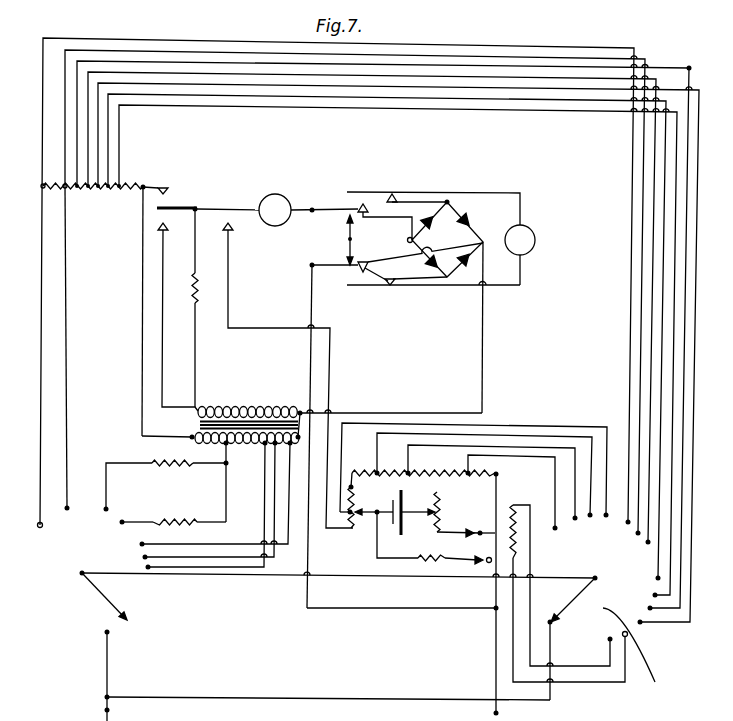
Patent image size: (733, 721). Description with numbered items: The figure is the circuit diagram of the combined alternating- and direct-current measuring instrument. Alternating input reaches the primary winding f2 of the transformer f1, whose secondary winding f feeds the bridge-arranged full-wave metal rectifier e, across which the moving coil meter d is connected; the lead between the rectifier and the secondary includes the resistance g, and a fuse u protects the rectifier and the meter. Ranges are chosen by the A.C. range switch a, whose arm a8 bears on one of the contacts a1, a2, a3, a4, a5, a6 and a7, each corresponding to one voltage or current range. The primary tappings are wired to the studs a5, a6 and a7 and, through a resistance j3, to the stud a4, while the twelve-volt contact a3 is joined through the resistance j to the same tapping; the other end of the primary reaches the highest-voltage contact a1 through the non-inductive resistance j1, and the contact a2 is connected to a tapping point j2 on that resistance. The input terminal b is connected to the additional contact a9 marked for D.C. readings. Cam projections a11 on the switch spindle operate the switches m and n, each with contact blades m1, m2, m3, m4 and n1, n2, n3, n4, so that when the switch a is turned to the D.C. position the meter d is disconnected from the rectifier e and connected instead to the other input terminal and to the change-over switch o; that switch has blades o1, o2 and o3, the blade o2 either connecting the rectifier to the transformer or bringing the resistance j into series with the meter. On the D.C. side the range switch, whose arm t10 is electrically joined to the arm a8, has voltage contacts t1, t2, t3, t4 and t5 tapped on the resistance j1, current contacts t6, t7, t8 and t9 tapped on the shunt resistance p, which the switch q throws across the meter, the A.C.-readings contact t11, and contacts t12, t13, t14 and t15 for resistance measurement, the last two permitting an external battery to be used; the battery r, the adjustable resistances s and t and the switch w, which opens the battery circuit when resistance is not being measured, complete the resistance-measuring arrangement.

The non-inductive resistance j1 is at (110, 192).
The tapping point j2 is at (70, 192).
The contact blade o1 is at (196, 208).
The contact blade o2 is at (167, 225).
The contact blade o3 is at (163, 187).
The fuse u is at (273, 193).
The resistance g is at (199, 287).
The switch q is at (233, 226).
The switch m is at (396, 201).
The contact blade m1 is at (363, 190).
The contact blade m2 is at (428, 212).
The contact blade m3 is at (323, 208).
The contact blade m4 is at (418, 205).
The full wave metal rectifier e is at (460, 207).
The moving coil meter d is at (535, 240).
The switch n is at (373, 273).
The contact blade n1 is at (355, 287).
The contact blade n2 is at (433, 279).
The contact blade n3 is at (311, 267).
The contact blade n4 is at (393, 283).
The cam projections a11 is at (348, 240).
The secondary winding f is at (272, 409).
The transformer f1 is at (237, 424).
The primary winding f2 is at (248, 445).
The resistance j is at (172, 467).
The resistance j3 is at (173, 520).
The A.C. range switch a is at (72, 547).
The contact a1 is at (335, 294).
The contact a2 is at (67, 506).
The contact a3 is at (106, 509).
The contact a4 is at (122, 522).
The contact a5 is at (142, 544).
The contact a6 is at (145, 557).
The contact a7 is at (150, 568).
The switch arm a8 is at (102, 599).
The additional contact a9 is at (107, 632).
The input terminal b is at (313, 708).
The shunt resistance p is at (447, 470).
The adjustable resistance s is at (348, 514).
The battery r is at (400, 515).
The adjustable resistance t is at (441, 492).
The switch w is at (466, 520).
The D.C. range switch contact t1 is at (628, 524).
The D.C. range switch contact t2 is at (638, 535).
The D.C. range switch contact t3 is at (648, 544).
The D.C. range switch contact t4 is at (658, 578).
The D.C. range switch contact t5 is at (655, 595).
The D.C. range switch contact t6 is at (555, 530).
The D.C. range switch contact t7 is at (575, 520).
The D.C. range switch contact t8 is at (590, 517).
The D.C. range switch contact t9 is at (606, 517).
The contact arm t10 is at (580, 593).
The additional contact t11 is at (550, 622).
The contact t12 is at (610, 639).
The contact t13 is at (623, 632).
The contact stud t14 is at (640, 624).
The contact stud t15 is at (651, 610).